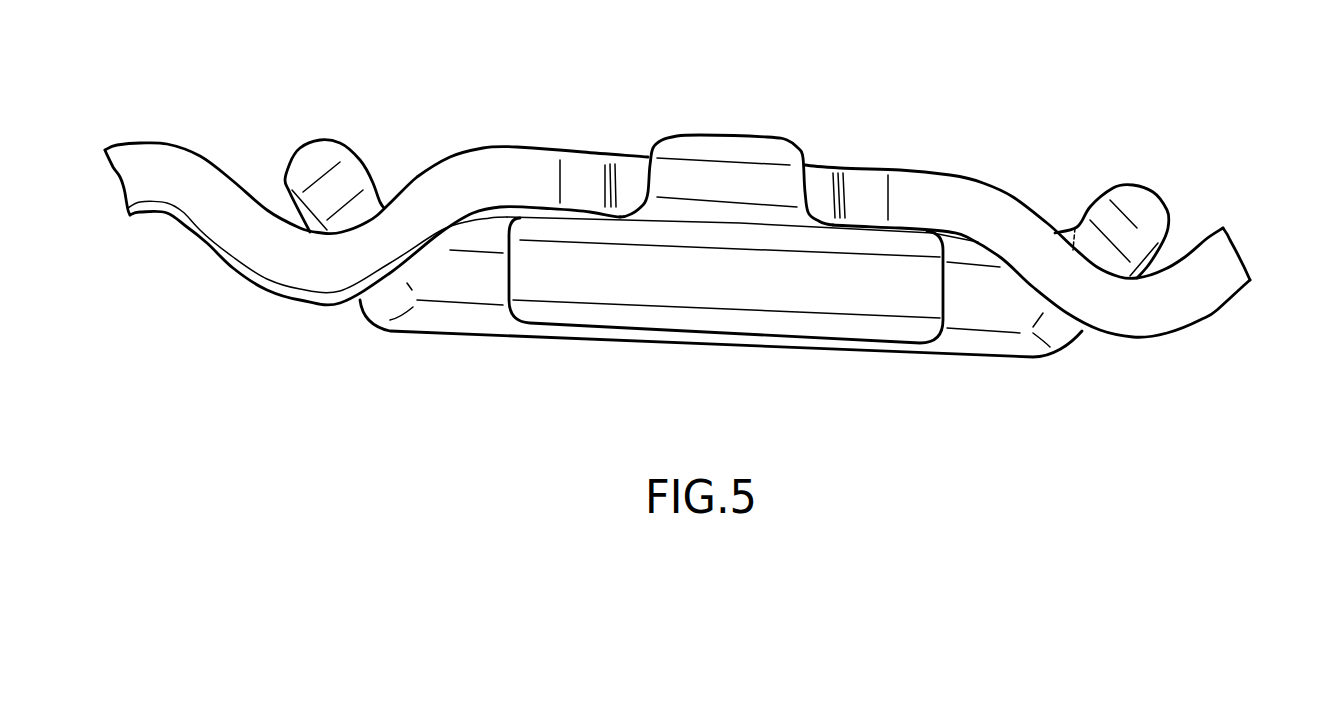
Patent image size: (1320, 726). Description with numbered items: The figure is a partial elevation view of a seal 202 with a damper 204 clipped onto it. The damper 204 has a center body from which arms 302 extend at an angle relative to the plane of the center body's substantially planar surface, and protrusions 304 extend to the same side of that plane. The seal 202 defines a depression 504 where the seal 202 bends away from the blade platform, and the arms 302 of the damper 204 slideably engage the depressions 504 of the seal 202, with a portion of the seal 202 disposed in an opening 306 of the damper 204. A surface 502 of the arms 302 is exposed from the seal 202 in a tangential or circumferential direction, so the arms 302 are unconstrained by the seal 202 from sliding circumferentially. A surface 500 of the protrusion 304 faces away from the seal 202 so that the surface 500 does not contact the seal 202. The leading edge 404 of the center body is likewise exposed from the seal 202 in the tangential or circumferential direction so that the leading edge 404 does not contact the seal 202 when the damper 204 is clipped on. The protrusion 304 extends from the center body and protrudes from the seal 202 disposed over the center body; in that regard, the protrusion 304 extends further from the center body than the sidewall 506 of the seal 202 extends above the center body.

The seal 202 is at (1232, 240).
The damper 204 is at (600, 287).
The arms 302 is at (1137, 187).
The protrusion 304 is at (740, 137).
The opening 306 is at (983, 305).
The leading edge 404 is at (810, 295).
The surface 500 is at (783, 182).
The surface 502 is at (1123, 232).
The depression 504 is at (257, 223).
The sidewall 506 is at (910, 188).